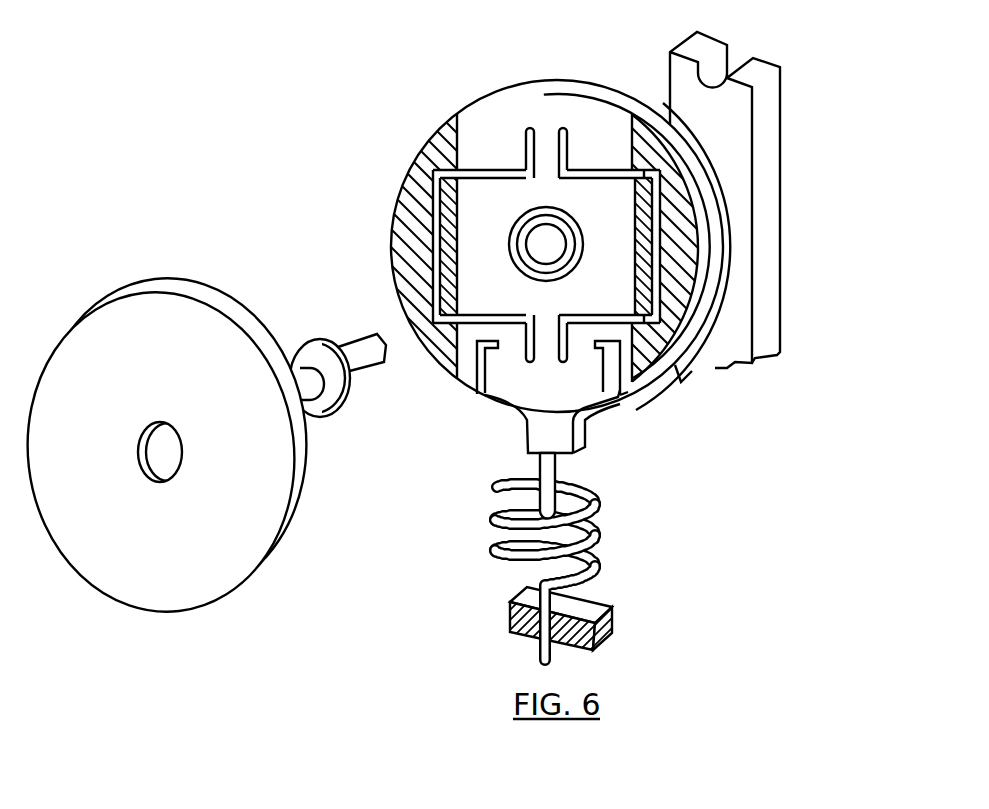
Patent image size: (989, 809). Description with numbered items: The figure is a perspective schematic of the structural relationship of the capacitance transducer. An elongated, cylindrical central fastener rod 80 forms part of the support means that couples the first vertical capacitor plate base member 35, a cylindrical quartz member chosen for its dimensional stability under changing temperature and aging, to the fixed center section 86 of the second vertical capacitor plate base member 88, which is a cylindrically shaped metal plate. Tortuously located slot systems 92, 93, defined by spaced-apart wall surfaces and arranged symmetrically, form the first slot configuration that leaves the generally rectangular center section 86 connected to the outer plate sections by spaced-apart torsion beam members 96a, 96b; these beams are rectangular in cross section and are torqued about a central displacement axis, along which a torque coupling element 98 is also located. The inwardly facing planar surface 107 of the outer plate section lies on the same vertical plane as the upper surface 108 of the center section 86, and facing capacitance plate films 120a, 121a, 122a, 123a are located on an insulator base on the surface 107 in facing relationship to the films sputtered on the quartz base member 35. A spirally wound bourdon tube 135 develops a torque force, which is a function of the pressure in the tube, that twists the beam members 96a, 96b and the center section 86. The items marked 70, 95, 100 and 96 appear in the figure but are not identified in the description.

The first vertical capacitor plate base member 35 is at (208, 560).
The upper surface of the center section 108 is at (322, 350).
The central fastener rod 80 is at (368, 387).
The fixed center section 86 is at (618, 272).
The facing capacitance plate film 121a is at (407, 190).
The facing capacitance plate film 120a is at (431, 168).
The facing capacitance plate film 122a is at (680, 235).
The facing capacitance plate film 123a is at (605, 228).
The slot system 92 is at (437, 230).
The slot system 93 is at (662, 292).
The inwardly facing planar surface 107 is at (655, 184).
The torsion beam member 96a is at (548, 138).
The torsion beam member 96b is at (547, 352).
The bearing ring 70 is at (573, 220).
The bearing bore 100 is at (537, 228).
The lower flange 95 is at (478, 333).
The torque coupling element 98 is at (582, 420).
The second vertical capacitor plate base member 88 is at (495, 450).
The spirally wound bourdon tube 135 is at (493, 570).
The mounting plate 96 is at (685, 363).